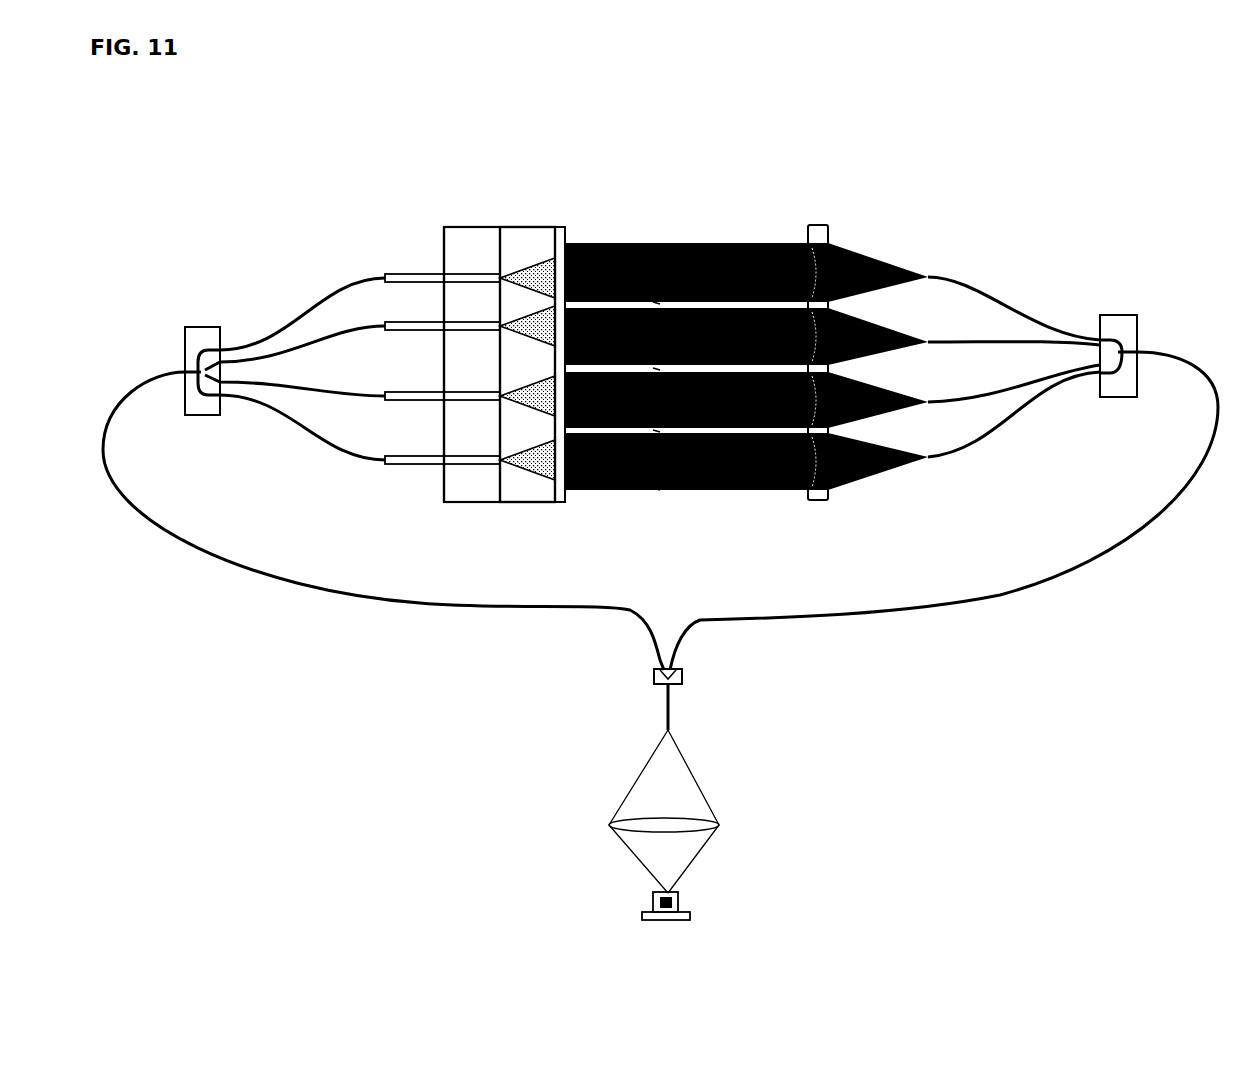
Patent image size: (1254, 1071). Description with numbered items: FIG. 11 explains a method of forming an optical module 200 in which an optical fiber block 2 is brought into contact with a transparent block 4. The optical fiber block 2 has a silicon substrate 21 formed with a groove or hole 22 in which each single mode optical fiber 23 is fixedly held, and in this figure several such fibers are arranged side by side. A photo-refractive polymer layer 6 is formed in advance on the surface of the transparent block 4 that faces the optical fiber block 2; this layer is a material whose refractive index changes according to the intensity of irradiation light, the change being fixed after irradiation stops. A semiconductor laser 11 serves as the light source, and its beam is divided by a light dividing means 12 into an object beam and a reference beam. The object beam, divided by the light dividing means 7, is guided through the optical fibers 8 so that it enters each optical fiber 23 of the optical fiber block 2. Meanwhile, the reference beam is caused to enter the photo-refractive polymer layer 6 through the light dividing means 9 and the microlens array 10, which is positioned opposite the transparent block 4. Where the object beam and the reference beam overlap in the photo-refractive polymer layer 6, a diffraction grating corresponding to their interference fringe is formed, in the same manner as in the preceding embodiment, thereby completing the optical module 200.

The optical module 200 is at (475, 200).
The optical fiber block 2 is at (424, 256).
The transparent block 4 is at (516, 496).
The photo-refractive polymer layer 6 is at (560, 255).
The light dividing means 7 is at (205, 333).
The optical fibers 8 is at (273, 332).
The light dividing means 9 is at (1114, 322).
The microlens array 10 is at (822, 235).
The semiconductor laser 11 is at (640, 904).
The light dividing means 12 is at (654, 678).
The silicon substrate 21 is at (452, 489).
The groove or hole 22 is at (484, 328).
The single mode optical fiber 23 is at (387, 275).